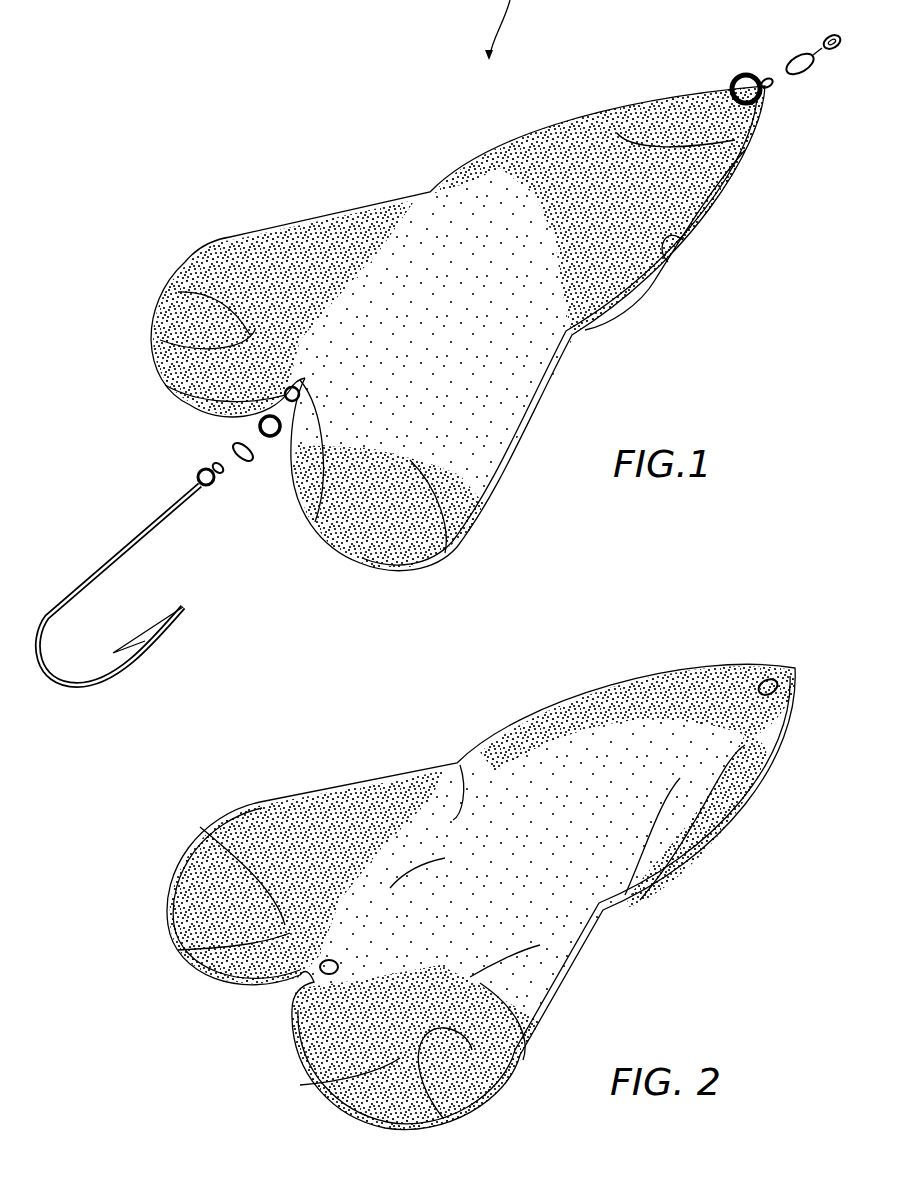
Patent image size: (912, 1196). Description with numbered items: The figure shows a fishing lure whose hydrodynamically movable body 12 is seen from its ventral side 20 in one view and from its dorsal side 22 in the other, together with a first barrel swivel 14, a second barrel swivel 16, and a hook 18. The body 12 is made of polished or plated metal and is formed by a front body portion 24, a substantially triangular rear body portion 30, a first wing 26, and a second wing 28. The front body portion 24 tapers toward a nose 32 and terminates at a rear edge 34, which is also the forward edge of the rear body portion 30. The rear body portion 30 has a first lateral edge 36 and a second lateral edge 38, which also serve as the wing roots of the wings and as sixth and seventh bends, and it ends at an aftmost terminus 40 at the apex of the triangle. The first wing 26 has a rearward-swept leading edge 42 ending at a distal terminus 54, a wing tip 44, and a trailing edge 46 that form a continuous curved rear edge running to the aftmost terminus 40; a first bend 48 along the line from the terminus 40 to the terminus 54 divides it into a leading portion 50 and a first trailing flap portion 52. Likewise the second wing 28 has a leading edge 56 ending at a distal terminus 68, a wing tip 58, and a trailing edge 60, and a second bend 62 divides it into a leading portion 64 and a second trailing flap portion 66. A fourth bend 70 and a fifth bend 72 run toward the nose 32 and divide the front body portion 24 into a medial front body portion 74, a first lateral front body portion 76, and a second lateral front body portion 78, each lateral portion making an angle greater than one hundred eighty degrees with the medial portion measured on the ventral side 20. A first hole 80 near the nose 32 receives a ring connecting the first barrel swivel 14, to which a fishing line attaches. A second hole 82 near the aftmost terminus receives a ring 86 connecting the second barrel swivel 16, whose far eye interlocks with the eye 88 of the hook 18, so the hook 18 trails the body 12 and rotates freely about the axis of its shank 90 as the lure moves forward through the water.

In FIG. 1, the body 12 is at (590, 330).
In FIG. 2, the body 12 is at (597, 661).
In FIG. 1, the first barrel swivel 14 is at (810, 47).
In FIG. 1, the second barrel swivel 16 is at (247, 462).
In FIG. 1, the hook 18 is at (119, 581).
In FIG. 1, the ventral side 20 is at (430, 238).
In FIG. 2, the dorsal side 22 is at (605, 909).
In FIG. 1, the front body portion 24 is at (655, 183).
In FIG. 2, the front body portion 24 is at (630, 813).
In FIG. 1, the first wing 26 is at (262, 300).
In FIG. 2, the first wing 26 is at (513, 1007).
In FIG. 1, the second wing 28 is at (455, 462).
In FIG. 2, the second wing 28 is at (326, 845).
In FIG. 1, the rear body portion 30 is at (572, 356).
In FIG. 2, the rear body portion 30 is at (458, 764).
In FIG. 1, the nose 32 is at (778, 97).
In FIG. 2, the nose 32 is at (796, 670).
In FIG. 1, the rear edge 34 is at (520, 157).
In FIG. 2, the rear edge 34 is at (495, 812).
In FIG. 1, the first lateral edge 36 is at (333, 314).
In FIG. 2, the first lateral edge 36 is at (517, 1060).
In FIG. 1, the second lateral edge 38 is at (413, 378).
In FIG. 2, the second lateral edge 38 is at (390, 888).
In FIG. 1, the aftmost terminus 40 is at (175, 389).
In FIG. 2, the aftmost terminus 40 is at (300, 990).
In FIG. 1, the leading edge 42 is at (353, 208).
In FIG. 2, the leading edge 42 is at (560, 975).
In FIG. 1, the wing tip 44 is at (218, 235).
In FIG. 2, the wing tip 44 is at (480, 1110).
In FIG. 1, the trailing edge 46 is at (163, 382).
In FIG. 2, the trailing edge 46 is at (360, 1120).
In FIG. 1, the first bend 48 is at (163, 338).
In FIG. 2, the first bend 48 is at (440, 1115).
In FIG. 1, the leading portion 50 is at (343, 243).
In FIG. 2, the leading portion 50 is at (540, 945).
In FIG. 1, the first trailing flap portion 52 is at (178, 291).
In FIG. 2, the first trailing flap portion 52 is at (303, 1087).
In FIG. 1, the distal terminus 54 is at (232, 235).
In FIG. 2, the distal terminus 54 is at (540, 1040).
In FIG. 1, the leading edge 56 is at (548, 397).
In FIG. 2, the leading edge 56 is at (350, 790).
In FIG. 1, the wing tip 58 is at (457, 537).
In FIG. 2, the wing tip 58 is at (240, 803).
In FIG. 1, the trailing edge 60 is at (337, 566).
In FIG. 2, the trailing edge 60 is at (195, 975).
In FIG. 1, the second bend 62 is at (443, 553).
In FIG. 2, the second bend 62 is at (178, 950).
In FIG. 1, the leading portion 64 is at (500, 414).
In FIG. 2, the leading portion 64 is at (338, 815).
In FIG. 1, the second trailing flap portion 66 is at (380, 560).
In FIG. 2, the second trailing flap portion 66 is at (200, 827).
In FIG. 1, the distal terminus 68 is at (487, 513).
In FIG. 2, the distal terminus 68 is at (270, 800).
In FIG. 1, the fourth bend 70 is at (617, 133).
In FIG. 2, the fourth bend 70 is at (745, 745).
In FIG. 1, the fifth bend 72 is at (683, 240).
In FIG. 2, the fifth bend 72 is at (672, 715).
In FIG. 1, the medial front body portion 74 is at (657, 273).
In FIG. 2, the medial front body portion 74 is at (680, 778).
In FIG. 1, the first lateral front body portion 76 is at (585, 116).
In FIG. 2, the first lateral front body portion 76 is at (770, 735).
In FIG. 1, the second lateral front body portion 78 is at (745, 152).
In FIG. 2, the second lateral front body portion 78 is at (640, 685).
In FIG. 1, the first hole 80 is at (728, 80).
In FIG. 2, the first hole 80 is at (772, 679).
In FIG. 1, the second hole 82 is at (307, 526).
In FIG. 2, the second hole 82 is at (310, 1008).
In FIG. 1, the ring 86 is at (258, 428).
In FIG. 1, the eye 88 is at (230, 487).
In FIG. 1, the shank 90 is at (90, 566).